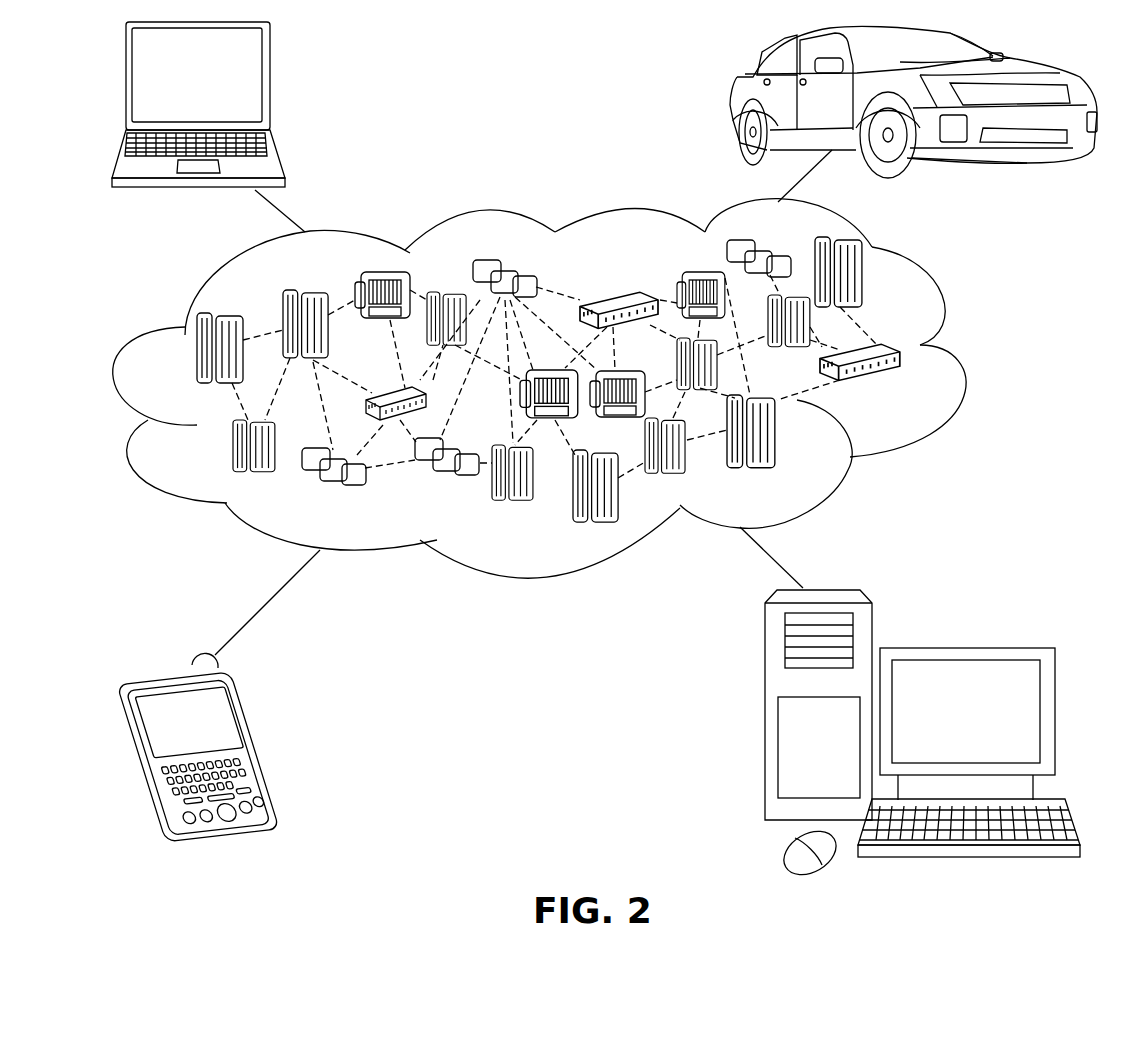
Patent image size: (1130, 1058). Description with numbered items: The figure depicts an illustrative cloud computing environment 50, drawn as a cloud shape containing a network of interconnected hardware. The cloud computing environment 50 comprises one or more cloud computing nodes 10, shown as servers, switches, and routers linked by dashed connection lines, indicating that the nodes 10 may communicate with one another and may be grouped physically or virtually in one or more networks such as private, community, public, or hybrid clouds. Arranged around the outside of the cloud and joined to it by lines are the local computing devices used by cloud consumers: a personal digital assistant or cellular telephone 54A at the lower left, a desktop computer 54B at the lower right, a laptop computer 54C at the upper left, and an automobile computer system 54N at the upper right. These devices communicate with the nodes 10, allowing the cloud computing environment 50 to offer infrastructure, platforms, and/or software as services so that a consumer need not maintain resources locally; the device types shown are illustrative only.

The cloud computing node 10 is at (910, 390).
The cloud computing environment 50 is at (963, 362).
The personal digital assistant or cellular telephone 54A is at (262, 742).
The desktop computer 54B is at (965, 648).
The laptop computer 54C is at (270, 88).
The automobile computer system 54N is at (735, 100).